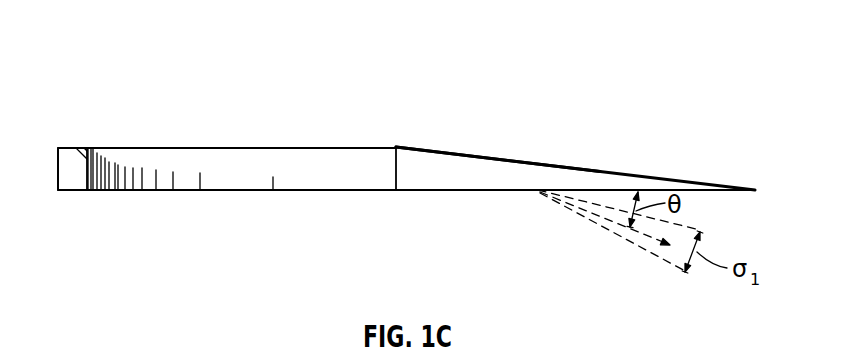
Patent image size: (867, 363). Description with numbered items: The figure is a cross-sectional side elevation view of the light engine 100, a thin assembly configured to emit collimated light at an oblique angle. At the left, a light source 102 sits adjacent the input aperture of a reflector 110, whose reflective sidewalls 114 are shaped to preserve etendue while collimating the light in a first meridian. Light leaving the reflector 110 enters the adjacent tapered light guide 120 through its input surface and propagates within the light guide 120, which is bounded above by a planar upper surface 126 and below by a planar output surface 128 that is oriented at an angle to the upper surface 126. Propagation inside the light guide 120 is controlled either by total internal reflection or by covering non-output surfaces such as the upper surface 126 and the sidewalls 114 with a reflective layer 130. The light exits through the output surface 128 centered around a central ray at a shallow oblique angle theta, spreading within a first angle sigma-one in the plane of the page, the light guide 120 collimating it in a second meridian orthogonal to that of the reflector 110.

The light engine 100 is at (140, 53).
The light source 102 is at (73, 155).
The reflector 110 is at (188, 146).
The reflective sidewalls 114 is at (340, 162).
The tapered light guide 120 is at (462, 172).
The planar upper surface 126 is at (488, 158).
The planar output surface 128 is at (442, 191).
The reflective layer 130 is at (600, 168).